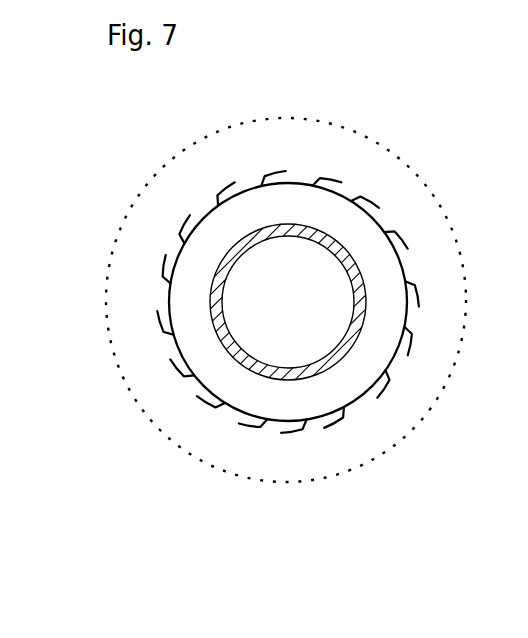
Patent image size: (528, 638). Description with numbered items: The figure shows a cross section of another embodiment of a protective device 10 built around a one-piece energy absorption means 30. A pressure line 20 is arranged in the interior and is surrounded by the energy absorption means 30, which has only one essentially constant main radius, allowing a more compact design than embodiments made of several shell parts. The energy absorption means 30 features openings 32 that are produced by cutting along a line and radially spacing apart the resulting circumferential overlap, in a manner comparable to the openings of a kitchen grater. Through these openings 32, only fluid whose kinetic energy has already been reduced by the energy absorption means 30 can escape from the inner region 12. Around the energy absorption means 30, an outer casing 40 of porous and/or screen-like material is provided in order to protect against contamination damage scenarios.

The protective device 10 is at (367, 79).
The inner region 12 is at (345, 398).
The pressure line 20 is at (358, 333).
The energy absorption means 30 is at (416, 254).
The openings 32 is at (415, 312).
The outer casing 40 is at (379, 143).